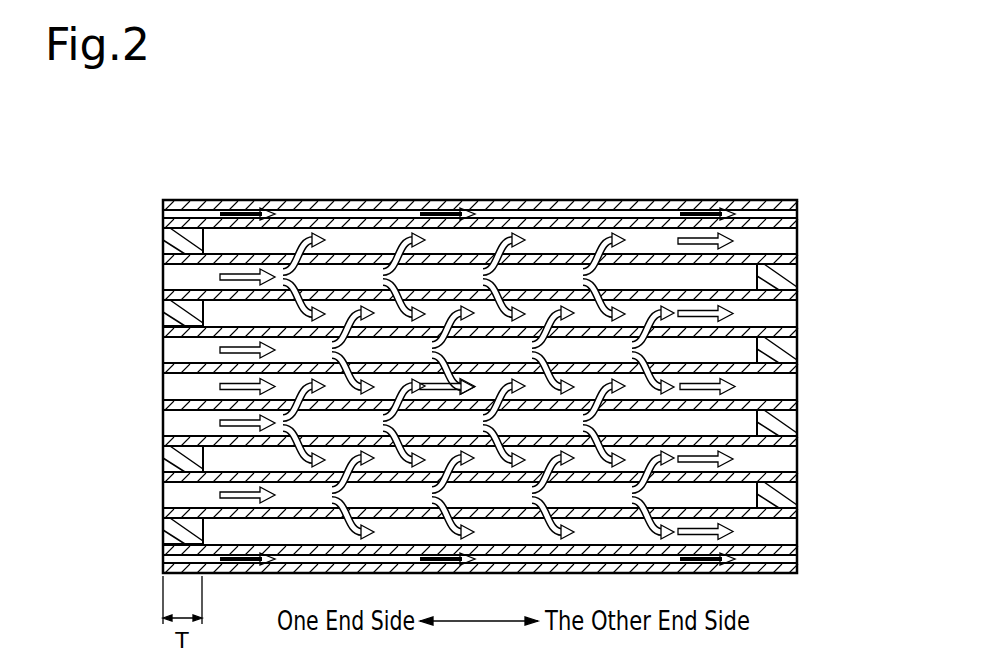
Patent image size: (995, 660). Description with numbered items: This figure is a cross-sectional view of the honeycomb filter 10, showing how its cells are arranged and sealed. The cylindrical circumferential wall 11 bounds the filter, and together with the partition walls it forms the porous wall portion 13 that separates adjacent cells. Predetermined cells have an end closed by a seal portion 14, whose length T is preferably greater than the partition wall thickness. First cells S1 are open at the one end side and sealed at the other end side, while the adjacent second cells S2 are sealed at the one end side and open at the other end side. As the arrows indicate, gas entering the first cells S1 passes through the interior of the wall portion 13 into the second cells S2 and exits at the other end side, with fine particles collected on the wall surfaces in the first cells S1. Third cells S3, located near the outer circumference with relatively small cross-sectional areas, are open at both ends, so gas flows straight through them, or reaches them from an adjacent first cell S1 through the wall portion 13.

The honeycomb filter 10 is at (595, 166).
The circumferential wall 11 is at (669, 200).
The wall portion 13 is at (371, 210).
The seal portion 14 is at (163, 237).
The first cell S1 is at (163, 277).
The second cell S2 is at (790, 241).
The third cell S3 is at (163, 213).